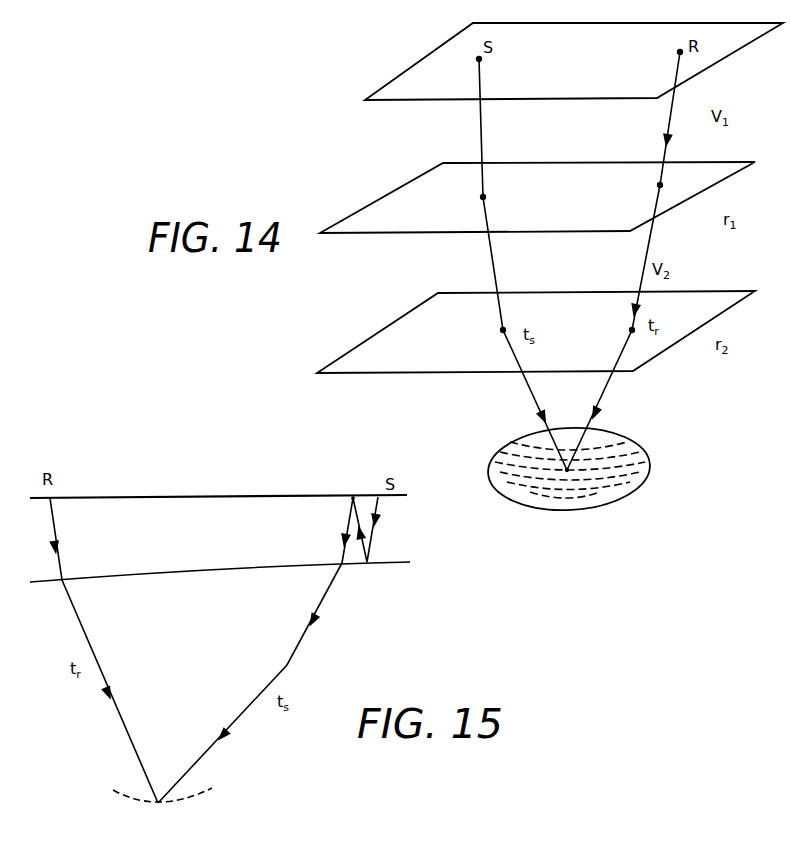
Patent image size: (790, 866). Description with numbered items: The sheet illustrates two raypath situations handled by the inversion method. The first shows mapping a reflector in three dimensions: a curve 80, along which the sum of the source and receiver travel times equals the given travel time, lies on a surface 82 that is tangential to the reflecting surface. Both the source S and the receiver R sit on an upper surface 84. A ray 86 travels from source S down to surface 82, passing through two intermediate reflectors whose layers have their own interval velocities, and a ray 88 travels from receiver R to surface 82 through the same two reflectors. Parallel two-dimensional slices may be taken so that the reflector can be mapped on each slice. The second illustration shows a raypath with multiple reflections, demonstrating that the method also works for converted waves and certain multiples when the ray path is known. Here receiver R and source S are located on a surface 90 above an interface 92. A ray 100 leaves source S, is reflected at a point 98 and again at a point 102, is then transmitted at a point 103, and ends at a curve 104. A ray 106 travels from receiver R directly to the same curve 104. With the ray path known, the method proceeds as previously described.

In FIG. 14, the curve 80 is at (534, 465).
In FIG. 14, the surface 82 is at (640, 486).
In FIG. 14, the surface 84 is at (722, 45).
In FIG. 14, the ray 86 is at (490, 258).
In FIG. 14, the ray 88 is at (650, 245).
In FIG. 15, the surface 90 is at (234, 495).
In FIG. 15, the interface 92 is at (229, 568).
In FIG. 15, the point 98 is at (367, 565).
In FIG. 15, the ray 100 is at (345, 529).
In FIG. 15, the point 102 is at (353, 494).
In FIG. 15, the point 103 is at (334, 570).
In FIG. 15, the curve 104 is at (129, 797).
In FIG. 15, the ray 106 is at (92, 641).